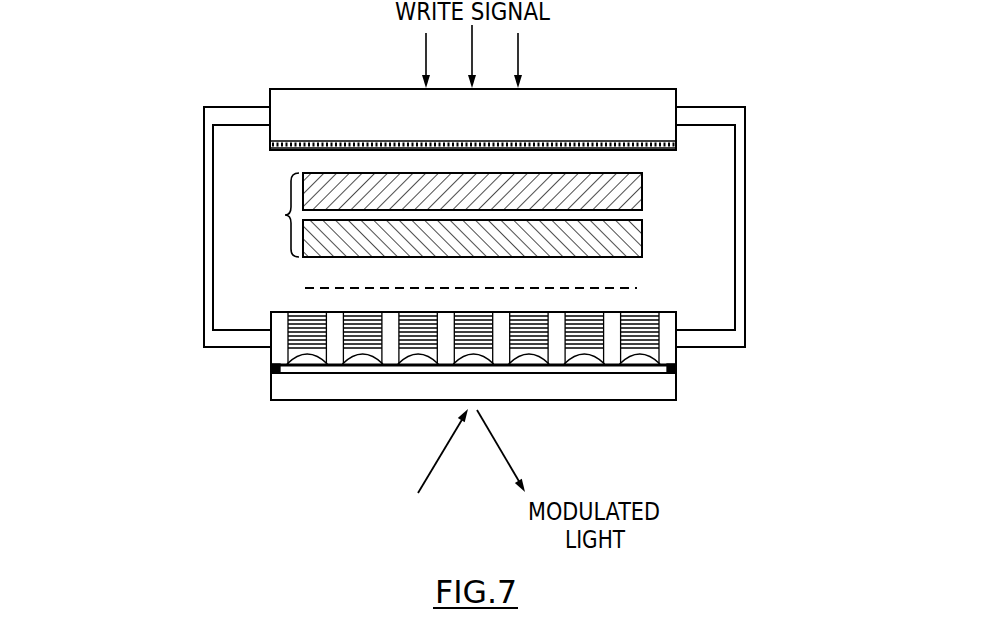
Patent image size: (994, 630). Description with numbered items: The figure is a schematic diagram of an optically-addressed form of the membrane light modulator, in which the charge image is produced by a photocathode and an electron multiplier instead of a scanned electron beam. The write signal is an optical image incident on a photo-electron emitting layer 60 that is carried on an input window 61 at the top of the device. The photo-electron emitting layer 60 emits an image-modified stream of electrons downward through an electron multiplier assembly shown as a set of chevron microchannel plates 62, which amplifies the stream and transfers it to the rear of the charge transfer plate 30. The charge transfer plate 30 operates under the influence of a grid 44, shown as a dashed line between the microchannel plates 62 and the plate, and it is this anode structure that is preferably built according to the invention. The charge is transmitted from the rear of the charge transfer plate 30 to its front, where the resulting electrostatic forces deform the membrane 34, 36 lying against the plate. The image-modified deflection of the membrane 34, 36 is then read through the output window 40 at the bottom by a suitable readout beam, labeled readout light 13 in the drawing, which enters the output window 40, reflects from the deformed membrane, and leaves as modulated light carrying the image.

The input window 61 is at (565, 89).
The photo-electron emitting layer 60 is at (630, 141).
The microchannel plates 62 is at (285, 215).
The grid 44 is at (638, 288).
The charge transfer plate 30 is at (285, 312).
The membrane 34 is at (587, 368).
The membrane 36 is at (591, 380).
The output window 40 is at (676, 384).
The readout light 13 is at (415, 481).